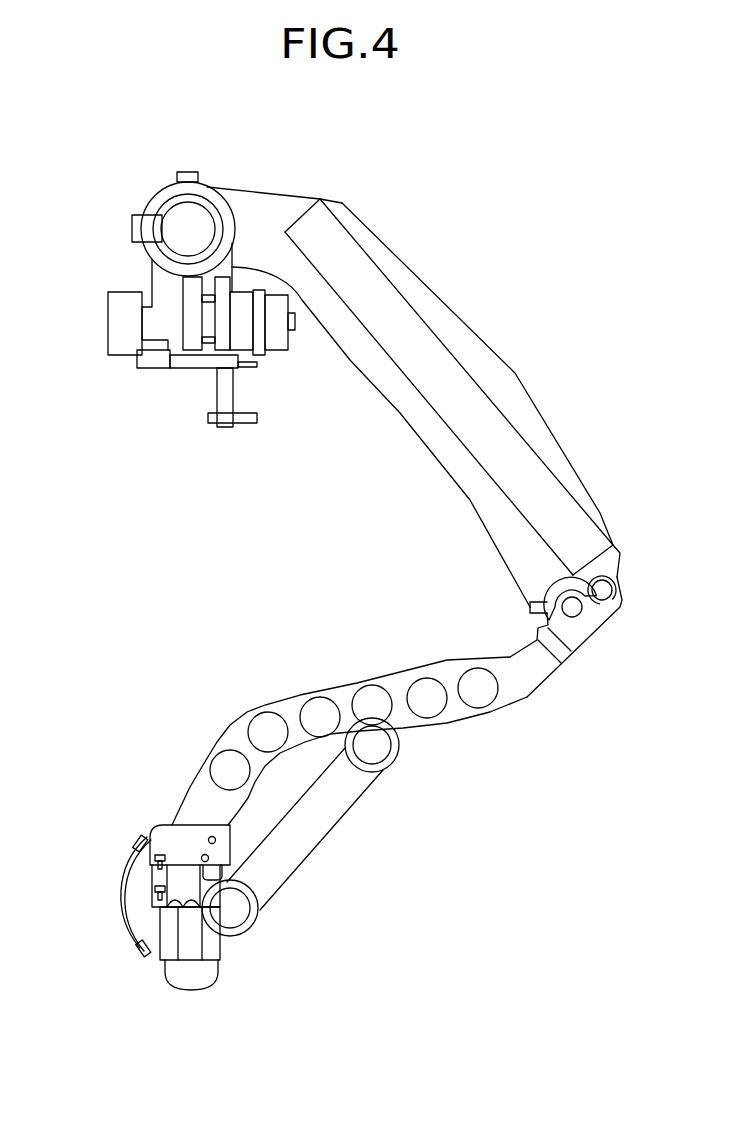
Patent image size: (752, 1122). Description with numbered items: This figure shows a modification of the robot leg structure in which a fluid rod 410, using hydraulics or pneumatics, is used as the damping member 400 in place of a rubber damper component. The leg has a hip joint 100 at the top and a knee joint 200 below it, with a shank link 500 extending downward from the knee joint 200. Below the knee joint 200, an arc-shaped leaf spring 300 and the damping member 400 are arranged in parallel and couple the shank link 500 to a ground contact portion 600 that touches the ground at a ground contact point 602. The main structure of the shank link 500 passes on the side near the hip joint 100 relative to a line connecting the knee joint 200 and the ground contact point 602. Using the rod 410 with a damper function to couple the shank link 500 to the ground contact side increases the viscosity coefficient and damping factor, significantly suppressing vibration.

The hip joint 100 is at (195, 227).
The knee joint 200 is at (580, 614).
The leaf spring 300 is at (116, 907).
The damping member 400 is at (152, 874).
The rod 410 is at (297, 835).
The shank link 500 is at (343, 693).
The ground contact portion 600 is at (231, 967).
The ground contact point 602 is at (197, 992).